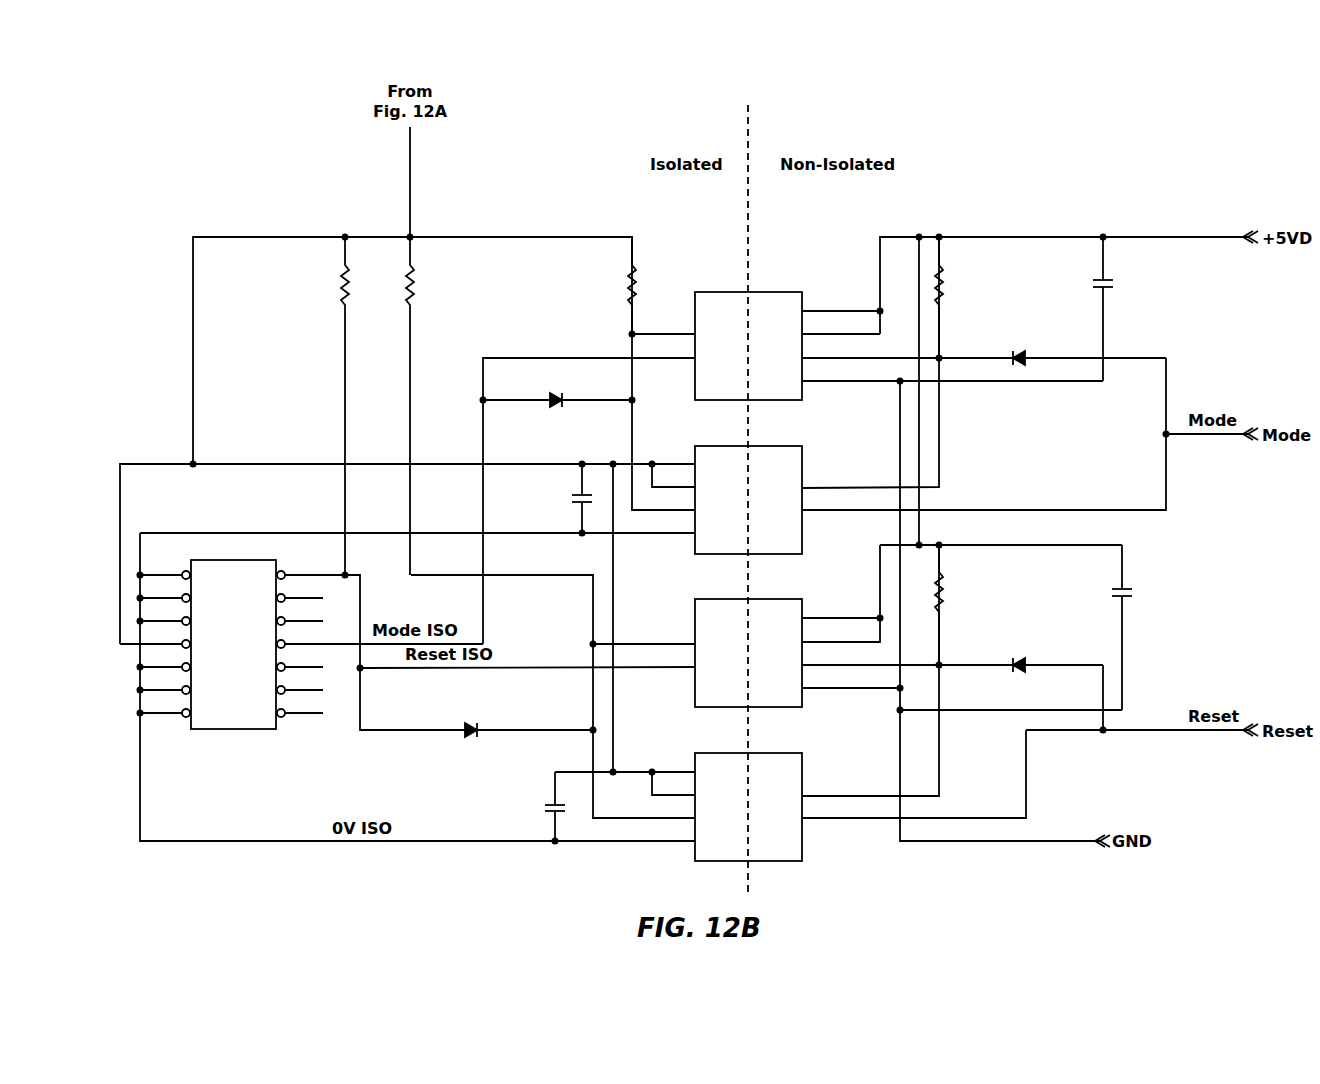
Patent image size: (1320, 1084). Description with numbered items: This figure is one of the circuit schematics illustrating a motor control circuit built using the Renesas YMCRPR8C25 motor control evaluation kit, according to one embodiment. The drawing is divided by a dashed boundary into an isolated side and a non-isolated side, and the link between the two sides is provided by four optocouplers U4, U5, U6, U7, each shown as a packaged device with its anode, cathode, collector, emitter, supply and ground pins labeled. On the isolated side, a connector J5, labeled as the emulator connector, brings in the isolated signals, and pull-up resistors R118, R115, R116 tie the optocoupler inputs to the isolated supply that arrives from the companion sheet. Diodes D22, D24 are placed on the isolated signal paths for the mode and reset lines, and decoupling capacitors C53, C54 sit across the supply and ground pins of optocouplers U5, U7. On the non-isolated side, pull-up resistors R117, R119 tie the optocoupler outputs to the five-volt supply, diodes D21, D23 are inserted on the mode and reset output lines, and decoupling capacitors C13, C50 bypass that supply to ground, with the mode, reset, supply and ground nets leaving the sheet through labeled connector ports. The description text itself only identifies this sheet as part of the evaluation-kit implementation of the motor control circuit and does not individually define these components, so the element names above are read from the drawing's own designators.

The 1K pull-up resistor R118 is at (322, 406).
The 1K pull-up resistor R115 is at (436, 406).
The 1K pull-up resistor R116 is at (610, 285).
The 1K pull-up resistor R117 is at (964, 297).
The 1K pull-up resistor R119 is at (964, 605).
The 0.1uF decoupling capacitor C13 is at (1129, 309).
The 0.1uF decoupling capacitor C50 is at (1095, 627).
The 0.1uF decoupling capacitor C53 is at (555, 498).
The 0.1uF decoupling capacitor C54 is at (528, 806).
The BAS70 Schottky diode D21 is at (1052, 348).
The BAS70 Schottky diode D22 is at (557, 389).
The BAS70 Schottky diode D23 is at (1021, 655).
The BAS70 Schottky diode D24 is at (476, 738).
The 6N137 optocoupler U4 is at (747, 335).
The 6N137 optocoupler U5 is at (747, 489).
The 6N137 optocoupler U6 is at (747, 642).
The 6N137 optocoupler U7 is at (747, 796).
The EB Emulator connector J5 is at (221, 649).